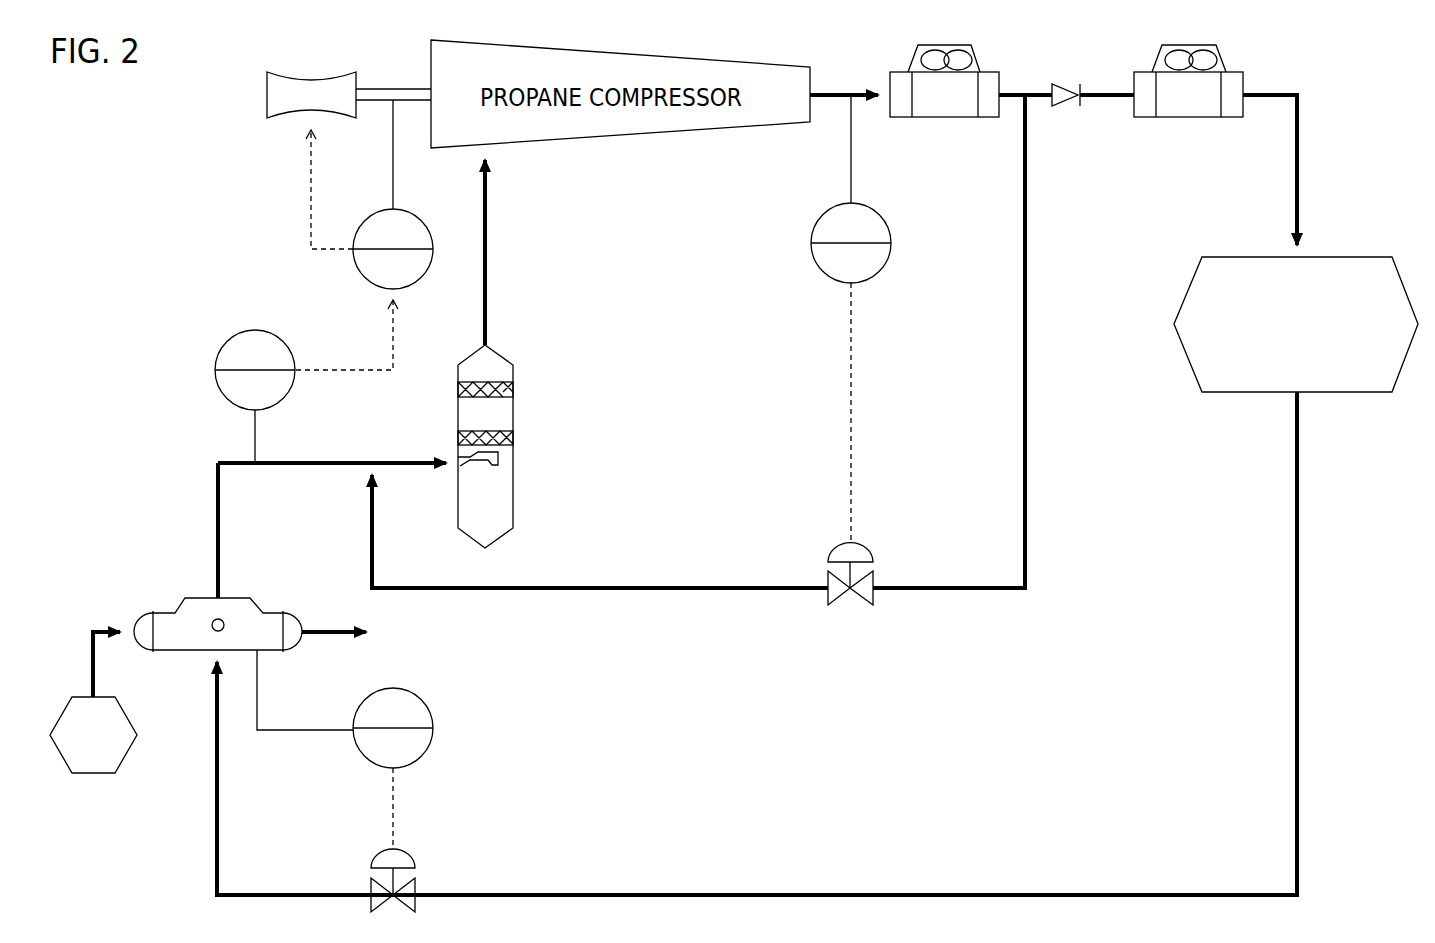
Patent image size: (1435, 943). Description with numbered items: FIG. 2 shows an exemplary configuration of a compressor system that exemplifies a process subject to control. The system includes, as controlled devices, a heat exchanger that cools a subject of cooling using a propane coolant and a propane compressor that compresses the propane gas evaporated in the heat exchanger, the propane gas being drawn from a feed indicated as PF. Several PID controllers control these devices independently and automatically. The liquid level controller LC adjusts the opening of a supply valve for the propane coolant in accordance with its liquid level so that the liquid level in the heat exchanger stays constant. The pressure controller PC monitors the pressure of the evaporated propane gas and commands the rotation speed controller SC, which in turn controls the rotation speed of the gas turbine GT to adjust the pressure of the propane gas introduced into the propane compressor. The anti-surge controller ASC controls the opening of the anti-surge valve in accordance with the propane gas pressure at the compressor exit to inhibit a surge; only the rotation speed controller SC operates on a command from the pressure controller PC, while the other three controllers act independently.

The gas turbine GT is at (349, 95).
The rotation speed controller SC is at (393, 249).
The pressure controller PC is at (255, 370).
The anti-surge controller ASC is at (851, 243).
The liquid level controller LC is at (393, 728).
The propane feed PF is at (93, 735).